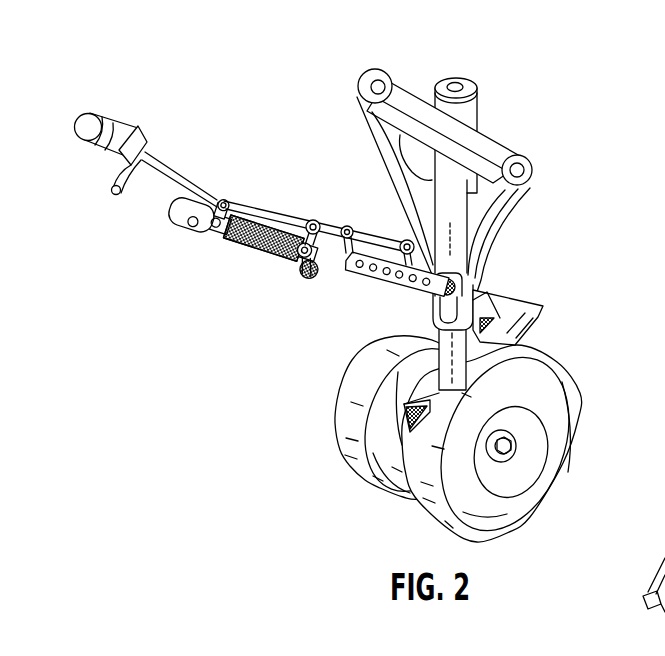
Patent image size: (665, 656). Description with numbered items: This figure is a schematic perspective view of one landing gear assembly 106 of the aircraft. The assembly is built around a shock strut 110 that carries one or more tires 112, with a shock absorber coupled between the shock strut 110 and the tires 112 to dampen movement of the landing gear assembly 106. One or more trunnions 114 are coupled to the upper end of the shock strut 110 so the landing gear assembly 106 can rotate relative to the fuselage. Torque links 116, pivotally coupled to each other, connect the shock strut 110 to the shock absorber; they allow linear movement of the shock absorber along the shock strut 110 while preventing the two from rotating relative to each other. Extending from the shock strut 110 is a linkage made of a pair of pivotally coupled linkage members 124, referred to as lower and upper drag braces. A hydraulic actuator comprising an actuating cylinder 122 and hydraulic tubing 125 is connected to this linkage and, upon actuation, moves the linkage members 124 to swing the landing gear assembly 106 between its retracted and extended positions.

The landing gear assembly 106 is at (521, 56).
The shock strut 110 is at (458, 180).
The tires 112 is at (570, 458).
The trunnions 114 is at (511, 155).
The torque links 116 is at (536, 307).
The actuating cylinder 122 is at (130, 146).
The linkage members 124 is at (237, 249).
The hydraulic tubing 125 is at (113, 188).